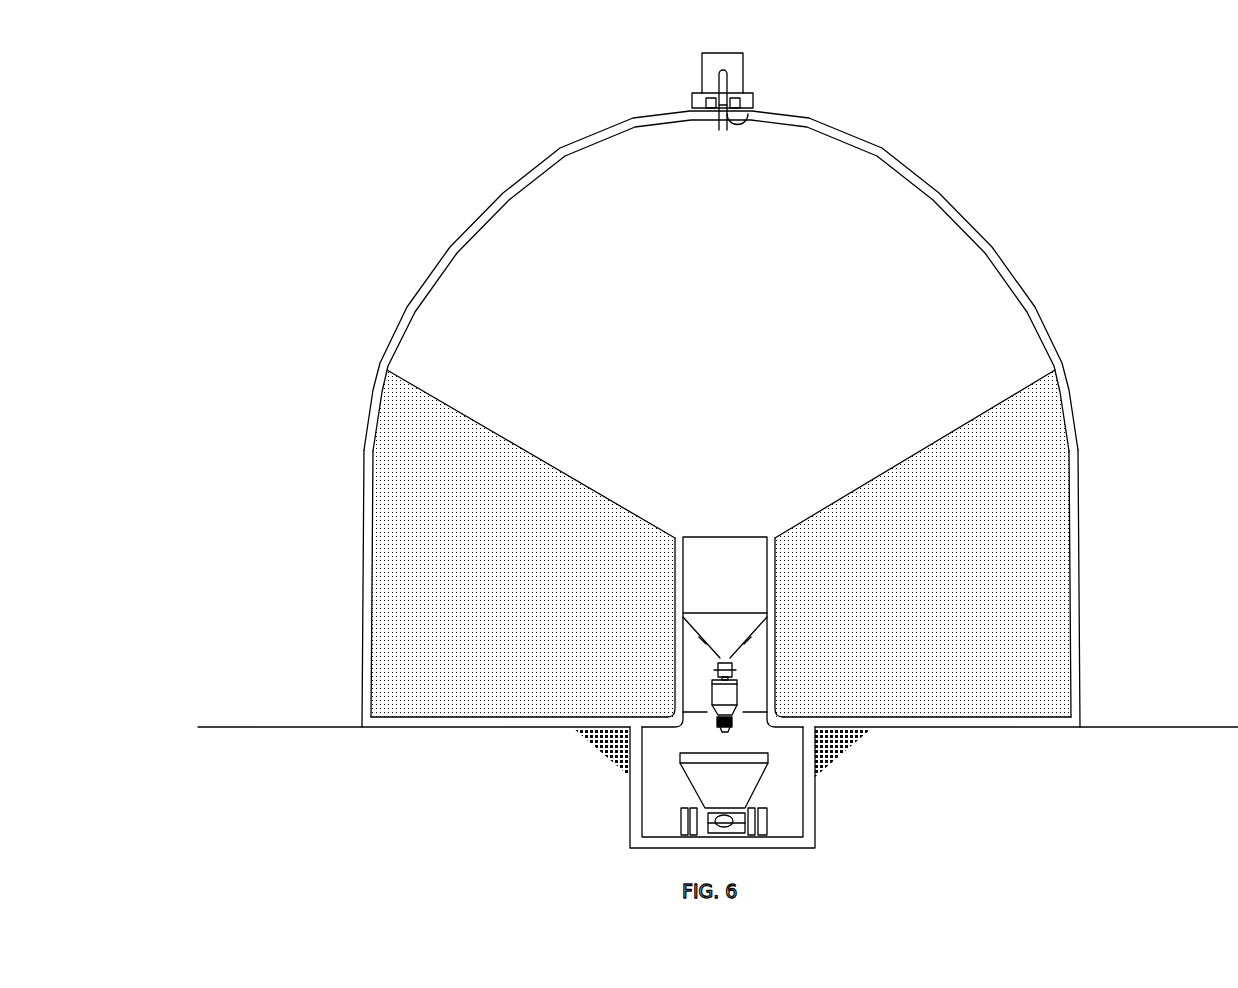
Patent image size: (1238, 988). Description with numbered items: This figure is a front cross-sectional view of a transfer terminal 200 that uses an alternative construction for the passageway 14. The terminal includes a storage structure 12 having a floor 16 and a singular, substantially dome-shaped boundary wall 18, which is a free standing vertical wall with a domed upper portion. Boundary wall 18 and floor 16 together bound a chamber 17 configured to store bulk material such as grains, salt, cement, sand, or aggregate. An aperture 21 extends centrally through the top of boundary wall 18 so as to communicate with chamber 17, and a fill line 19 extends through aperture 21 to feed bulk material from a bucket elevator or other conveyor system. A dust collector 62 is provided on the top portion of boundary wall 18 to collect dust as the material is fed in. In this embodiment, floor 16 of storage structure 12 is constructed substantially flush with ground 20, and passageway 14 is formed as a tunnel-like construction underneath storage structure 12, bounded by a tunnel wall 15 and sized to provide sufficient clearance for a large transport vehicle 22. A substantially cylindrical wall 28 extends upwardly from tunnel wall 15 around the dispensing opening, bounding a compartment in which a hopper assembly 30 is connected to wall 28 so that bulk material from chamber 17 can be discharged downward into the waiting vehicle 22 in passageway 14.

The transfer terminal 200 is at (718, 435).
The storage structure 12 is at (1082, 532).
The passageway 14 is at (793, 828).
The tunnel wall 15 is at (807, 795).
The floor 16 is at (480, 728).
The chamber 17 is at (950, 237).
The boundary wall 18 is at (362, 517).
The fill line 19 is at (723, 87).
The ground 20 is at (315, 727).
The aperture 21 is at (730, 122).
The transport vehicle 22 is at (697, 775).
The cylindrical wall 28 is at (777, 668).
The hopper assembly 30 is at (728, 512).
The dust collector 62 is at (737, 63).